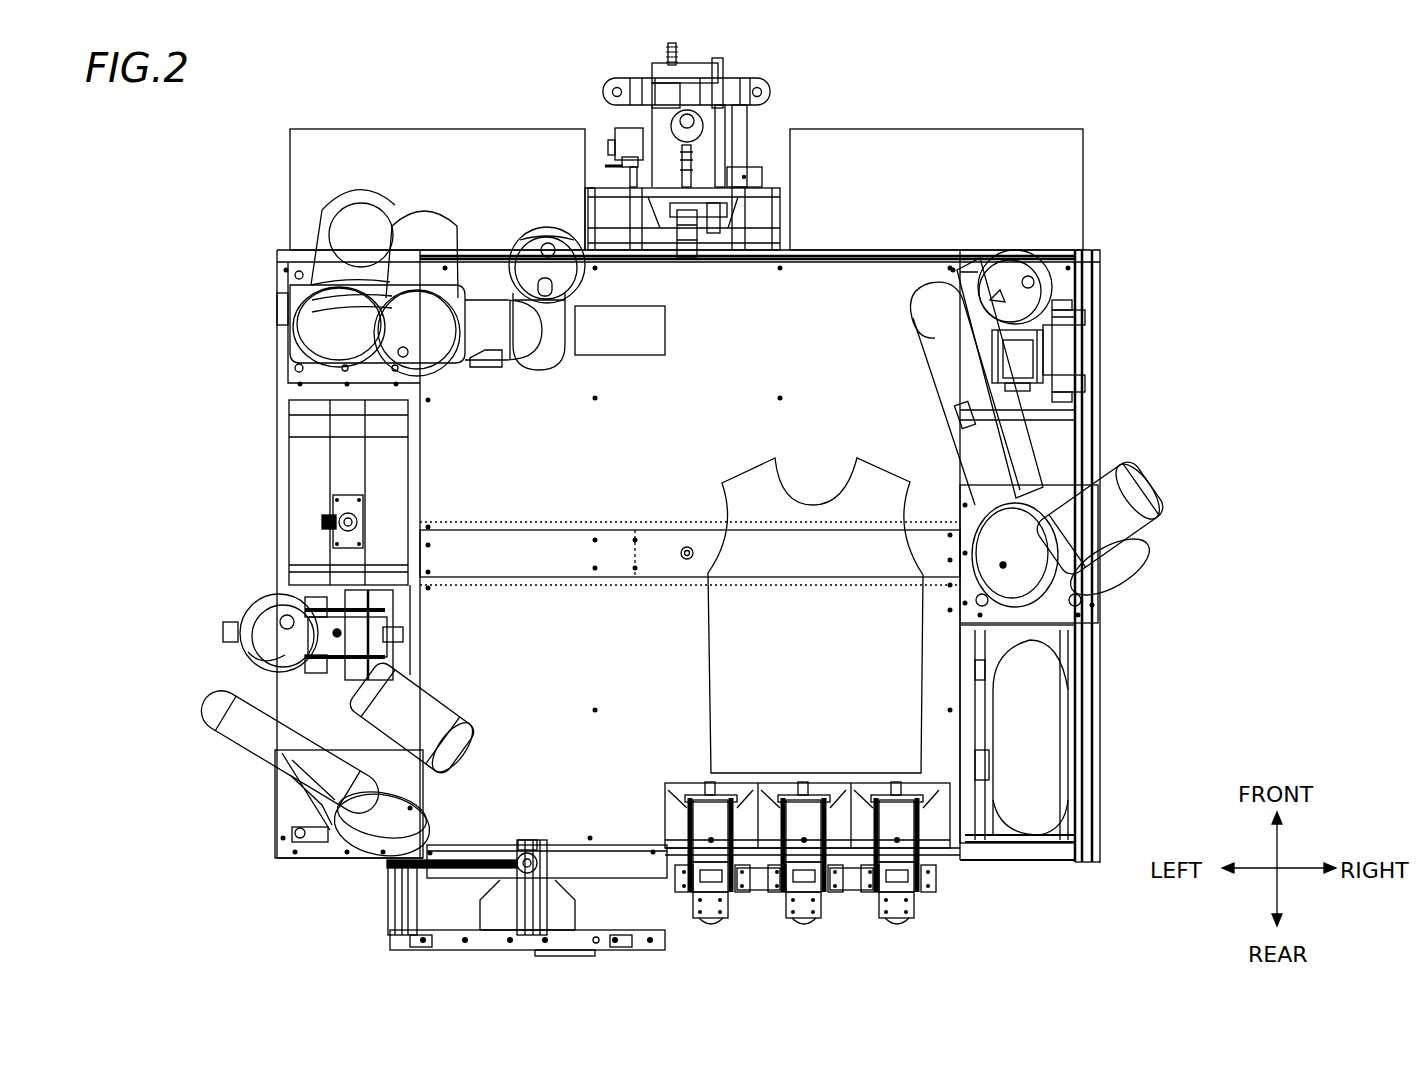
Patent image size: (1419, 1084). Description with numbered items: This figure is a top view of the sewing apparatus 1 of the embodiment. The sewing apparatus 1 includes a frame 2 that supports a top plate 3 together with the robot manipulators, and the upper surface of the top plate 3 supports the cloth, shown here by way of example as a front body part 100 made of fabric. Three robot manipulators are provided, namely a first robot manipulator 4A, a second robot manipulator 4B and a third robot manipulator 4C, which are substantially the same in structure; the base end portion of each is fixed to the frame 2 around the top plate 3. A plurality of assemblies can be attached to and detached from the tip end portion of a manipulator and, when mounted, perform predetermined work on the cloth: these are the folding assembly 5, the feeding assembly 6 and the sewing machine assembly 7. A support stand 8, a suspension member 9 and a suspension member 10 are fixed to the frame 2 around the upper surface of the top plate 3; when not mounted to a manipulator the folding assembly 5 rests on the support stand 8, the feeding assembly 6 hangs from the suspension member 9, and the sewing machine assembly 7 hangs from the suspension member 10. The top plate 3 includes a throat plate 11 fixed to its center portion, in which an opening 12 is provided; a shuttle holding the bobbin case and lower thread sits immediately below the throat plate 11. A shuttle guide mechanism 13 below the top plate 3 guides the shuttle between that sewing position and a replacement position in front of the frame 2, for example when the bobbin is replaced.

The sewing apparatus 1 is at (1176, 159).
The frame 2 is at (1095, 750).
The top plate 3 is at (887, 345).
The first robot manipulator 4A is at (262, 745).
The second robot manipulator 4B is at (382, 198).
The third robot manipulator 4C is at (1024, 445).
The folding assembly 5 is at (332, 600).
The feeding assembly 6 is at (625, 137).
The sewing machine assembly 7 is at (1085, 350).
The support stand 8 is at (285, 452).
The suspension member 9 is at (572, 210).
The suspension member 10 is at (1085, 383).
The throat plate 11 is at (658, 538).
The opening 12 is at (693, 545).
The shuttle guide mechanism 13 is at (765, 134).
The front body part 100 is at (877, 678).